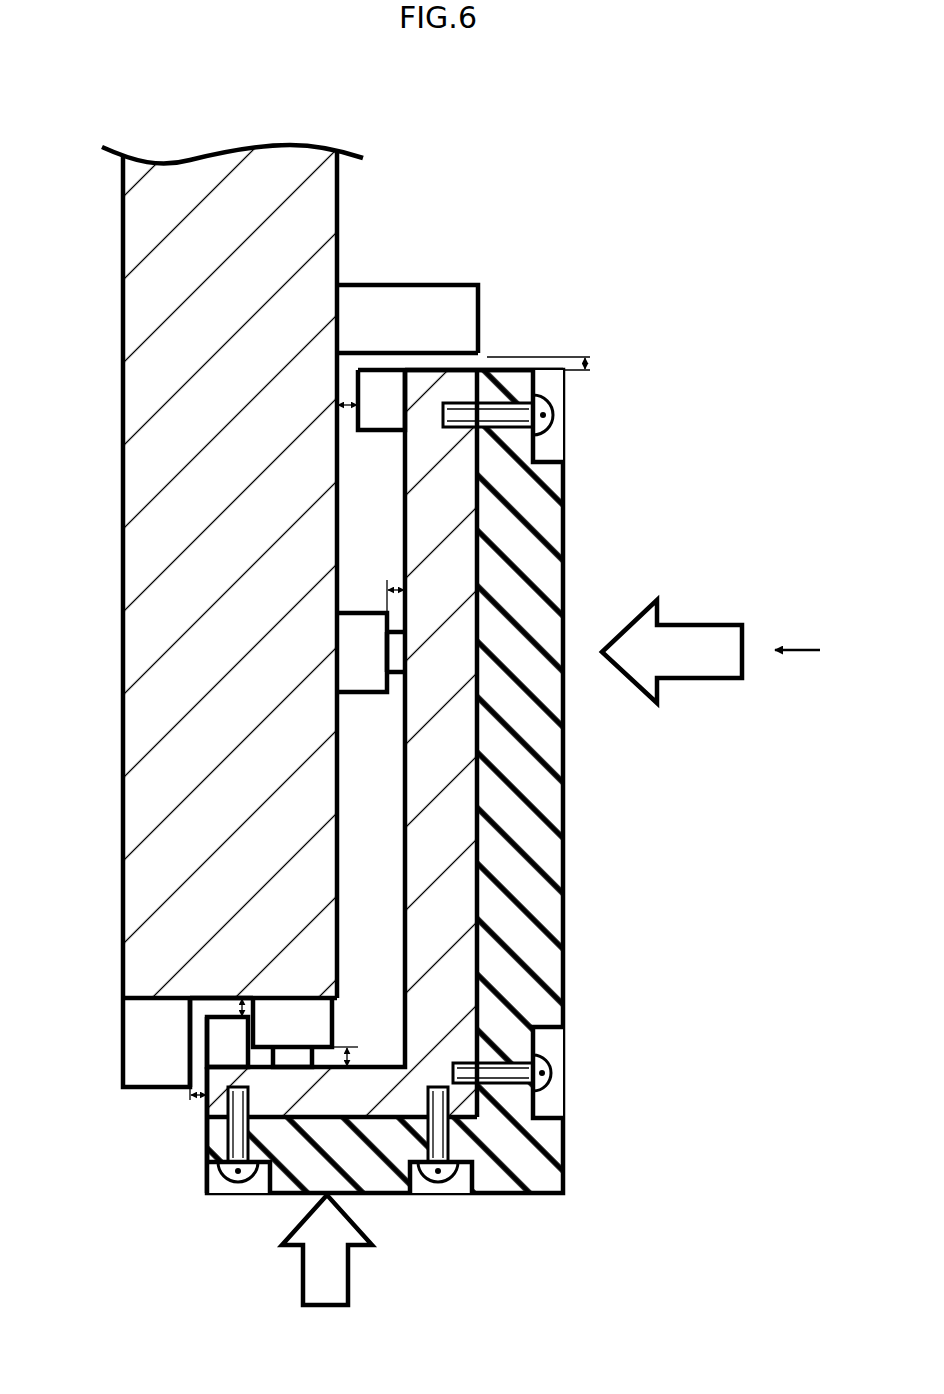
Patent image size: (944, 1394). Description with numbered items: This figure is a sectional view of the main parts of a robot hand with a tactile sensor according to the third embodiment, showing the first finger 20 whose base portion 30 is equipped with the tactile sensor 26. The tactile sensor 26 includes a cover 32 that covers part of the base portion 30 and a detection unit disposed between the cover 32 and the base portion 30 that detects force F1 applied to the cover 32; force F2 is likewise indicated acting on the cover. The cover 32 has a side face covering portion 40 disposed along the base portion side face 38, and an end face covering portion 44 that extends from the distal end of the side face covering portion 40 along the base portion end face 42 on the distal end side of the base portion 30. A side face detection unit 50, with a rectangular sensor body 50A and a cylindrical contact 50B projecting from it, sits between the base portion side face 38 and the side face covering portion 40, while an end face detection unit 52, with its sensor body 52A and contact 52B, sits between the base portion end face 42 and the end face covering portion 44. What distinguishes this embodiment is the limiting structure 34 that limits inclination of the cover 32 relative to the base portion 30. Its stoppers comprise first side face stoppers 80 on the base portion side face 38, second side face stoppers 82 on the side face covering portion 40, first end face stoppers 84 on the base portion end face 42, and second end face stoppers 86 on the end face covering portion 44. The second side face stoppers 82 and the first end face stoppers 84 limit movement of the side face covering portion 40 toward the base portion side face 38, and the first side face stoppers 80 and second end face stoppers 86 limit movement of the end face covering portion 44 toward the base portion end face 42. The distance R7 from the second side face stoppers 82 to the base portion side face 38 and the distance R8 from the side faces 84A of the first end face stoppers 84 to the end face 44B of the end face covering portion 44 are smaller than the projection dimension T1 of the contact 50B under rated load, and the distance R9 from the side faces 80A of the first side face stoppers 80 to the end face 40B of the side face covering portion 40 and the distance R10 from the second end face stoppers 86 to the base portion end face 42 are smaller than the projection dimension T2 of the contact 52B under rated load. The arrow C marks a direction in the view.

The first finger 20 is at (218, 146).
The base portion 30 is at (305, 160).
The tactile sensor 26 is at (607, 160).
The limiting structure 34 is at (373, 270).
The first side face stoppers 80 is at (445, 348).
The side faces of the first side face stoppers 80A is at (415, 350).
The end face of the side face covering portion 40B is at (443, 370).
The cover 32 is at (457, 366).
The distance dimension R9 is at (592, 364).
The second side face stoppers 82 is at (365, 380).
The distance dimension R7 is at (350, 412).
The side face covering portion 40 is at (458, 533).
The base portion side face 38 is at (343, 550).
The projection dimension T1 is at (393, 586).
The force F1 is at (680, 640).
The direction C is at (808, 651).
The side face detection unit 50 is at (508, 692).
The sensor body 50A is at (373, 680).
The contact 50B is at (397, 655).
The base portion end face 42 is at (228, 1005).
The second end face stoppers 86 is at (220, 1032).
The distance dimension R10 is at (243, 1000).
The first end face stoppers 84 is at (133, 1040).
The side faces of the first end face stoppers 84A is at (195, 1030).
The distance dimension R8 is at (195, 1097).
The end face of the end face covering portion 44B is at (207, 1105).
The end face detection unit 52 is at (465, 998).
The sensor body 52A is at (318, 1035).
The contact 52B is at (300, 1057).
The projection dimension T2 is at (352, 1058).
The end face covering portion 44 is at (300, 1105).
The force F2 is at (340, 1290).